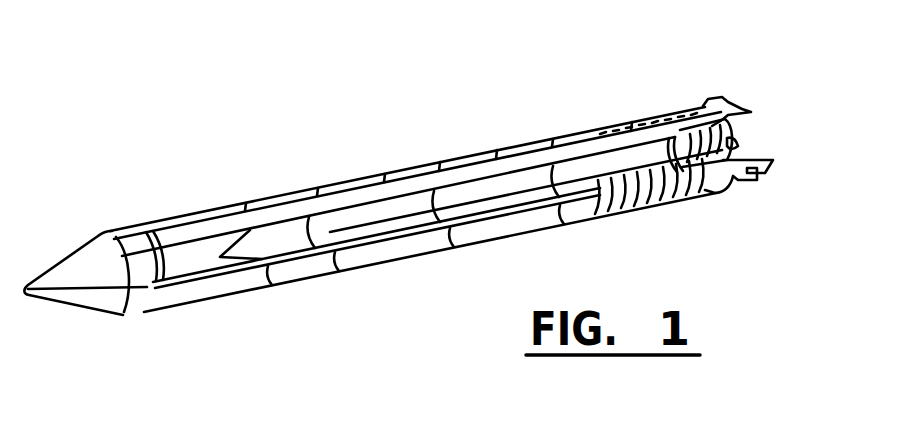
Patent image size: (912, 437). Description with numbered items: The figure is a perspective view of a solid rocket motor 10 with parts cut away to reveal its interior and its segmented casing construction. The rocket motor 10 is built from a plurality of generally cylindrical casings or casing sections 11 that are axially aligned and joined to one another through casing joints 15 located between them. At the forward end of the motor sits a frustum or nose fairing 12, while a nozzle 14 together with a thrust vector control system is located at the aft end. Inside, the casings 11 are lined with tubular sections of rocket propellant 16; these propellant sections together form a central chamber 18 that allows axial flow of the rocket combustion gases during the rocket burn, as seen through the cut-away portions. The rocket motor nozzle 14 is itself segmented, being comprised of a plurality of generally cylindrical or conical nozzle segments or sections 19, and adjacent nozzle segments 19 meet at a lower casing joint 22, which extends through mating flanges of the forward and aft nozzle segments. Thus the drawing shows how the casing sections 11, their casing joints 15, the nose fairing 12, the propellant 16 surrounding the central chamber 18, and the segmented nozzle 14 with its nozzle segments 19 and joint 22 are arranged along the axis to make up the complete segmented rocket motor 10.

The solid rocket motor 10 is at (133, 168).
The casing sections 11 is at (527, 228).
The nose fairing 12 is at (90, 298).
The nozzle 14 is at (712, 107).
The casing joints 15 is at (440, 166).
The rocket propellant 16 is at (254, 202).
The central chamber 18 is at (613, 168).
The nozzle segments 19 is at (773, 160).
The lower casing joint 22 is at (733, 140).